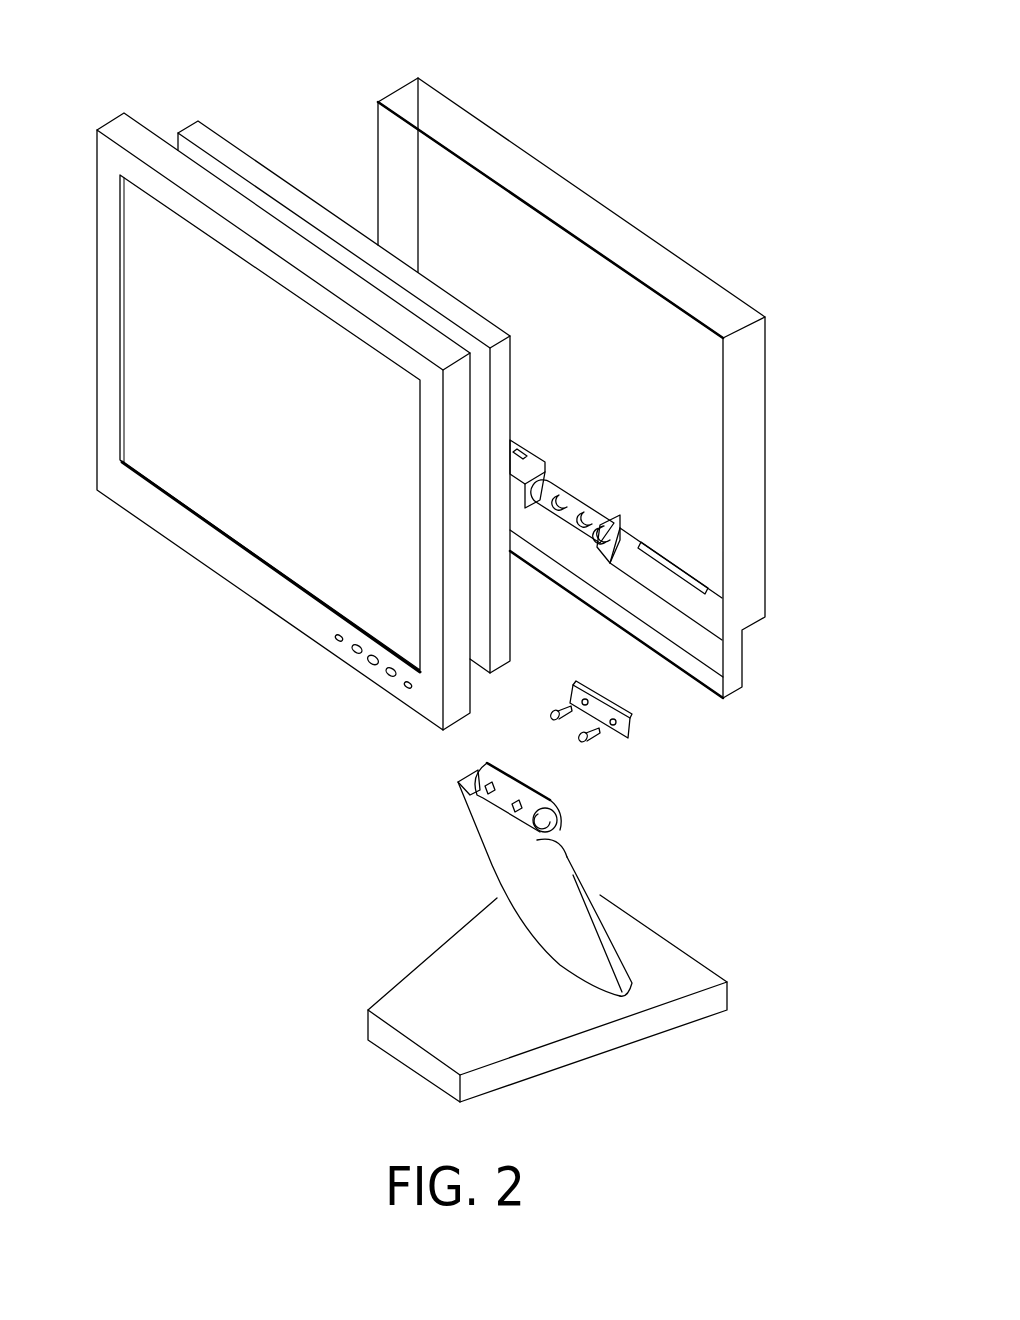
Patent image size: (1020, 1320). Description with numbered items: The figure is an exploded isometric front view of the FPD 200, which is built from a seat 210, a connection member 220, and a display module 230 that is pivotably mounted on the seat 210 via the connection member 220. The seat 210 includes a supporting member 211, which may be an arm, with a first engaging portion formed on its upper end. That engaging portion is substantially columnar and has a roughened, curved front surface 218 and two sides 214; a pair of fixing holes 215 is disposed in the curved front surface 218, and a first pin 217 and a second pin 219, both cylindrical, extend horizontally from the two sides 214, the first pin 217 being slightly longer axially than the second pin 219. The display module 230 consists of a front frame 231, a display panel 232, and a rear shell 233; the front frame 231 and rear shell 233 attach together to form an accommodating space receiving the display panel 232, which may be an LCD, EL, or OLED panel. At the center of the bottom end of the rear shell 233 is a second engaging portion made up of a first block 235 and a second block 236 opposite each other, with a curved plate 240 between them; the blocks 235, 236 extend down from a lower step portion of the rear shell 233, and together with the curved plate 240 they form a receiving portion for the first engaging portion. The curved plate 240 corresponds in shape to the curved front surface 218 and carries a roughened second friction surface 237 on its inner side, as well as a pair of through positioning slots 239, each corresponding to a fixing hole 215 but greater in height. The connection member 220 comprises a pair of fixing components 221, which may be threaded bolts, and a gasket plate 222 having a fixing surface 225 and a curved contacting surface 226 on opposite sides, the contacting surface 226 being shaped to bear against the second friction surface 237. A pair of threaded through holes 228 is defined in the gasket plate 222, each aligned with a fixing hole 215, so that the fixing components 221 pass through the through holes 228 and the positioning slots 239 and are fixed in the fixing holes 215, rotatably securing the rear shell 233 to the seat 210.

The FPD 200 is at (545, 80).
The seat 210 is at (665, 975).
The supporting member 211 is at (572, 918).
The sides 214 is at (555, 808).
The fixing holes 215 is at (520, 820).
The first pin 217 is at (540, 830).
The curved front surface 218 is at (503, 800).
The second pin 219 is at (475, 768).
The connection member 220 is at (695, 770).
The fixing components 221 is at (592, 742).
The gasket plate 222 is at (638, 736).
The fixing surface 225 is at (618, 680).
The contacting surface 226 is at (593, 676).
The through holes 228 is at (620, 732).
The display module 230 is at (357, 63).
The front frame 231 is at (120, 145).
The display panel 232 is at (210, 142).
The rear shell 233 is at (395, 160).
The first block 235 is at (615, 522).
The second block 236 is at (537, 450).
The second friction surface 237 is at (585, 517).
The positioning slots 239 is at (578, 540).
The curved plate 240 is at (567, 487).